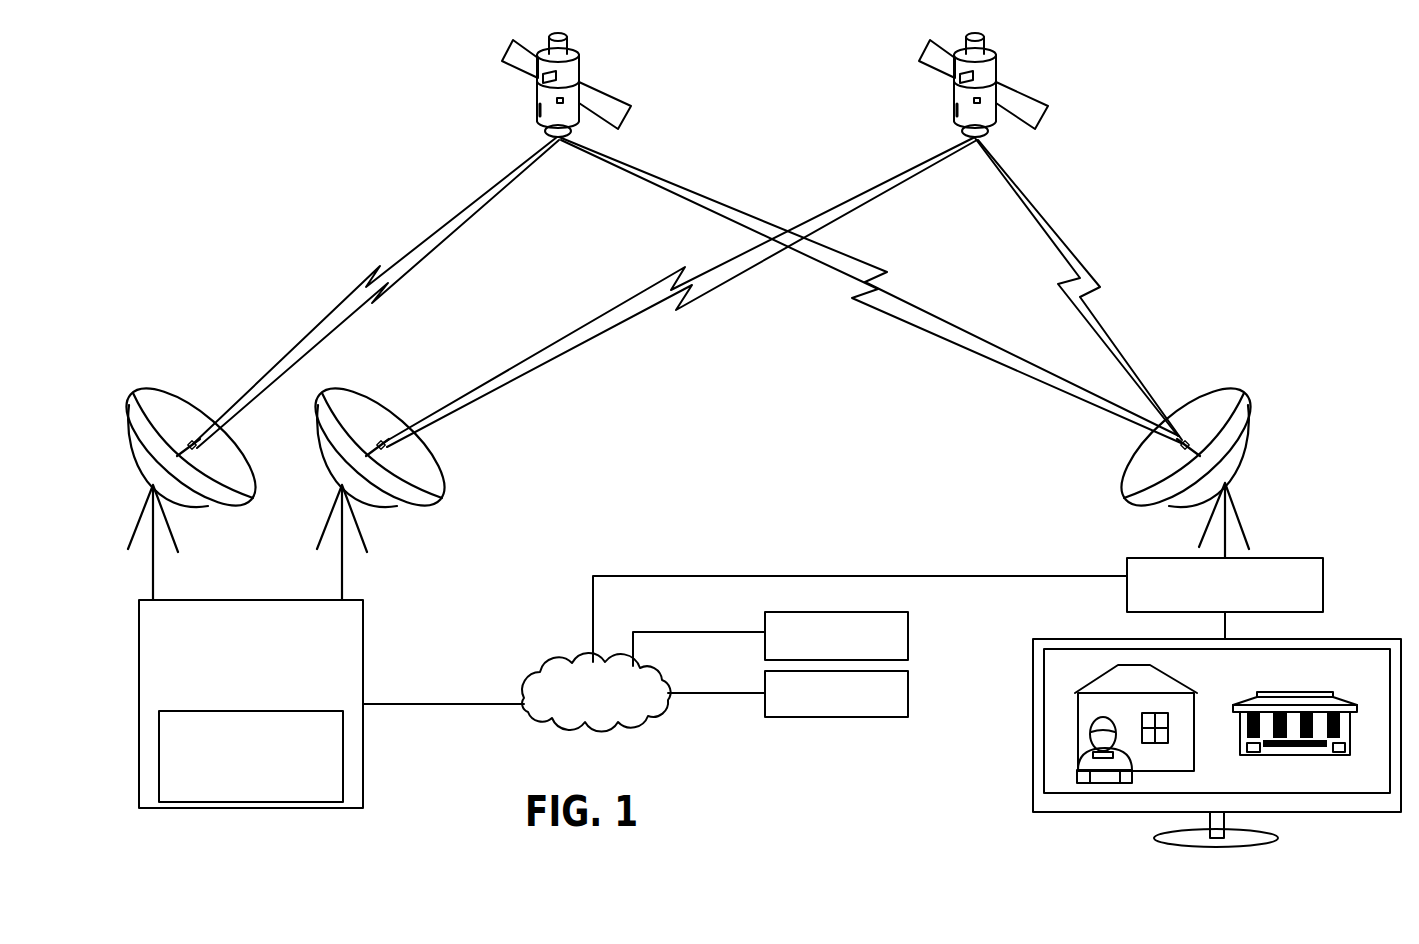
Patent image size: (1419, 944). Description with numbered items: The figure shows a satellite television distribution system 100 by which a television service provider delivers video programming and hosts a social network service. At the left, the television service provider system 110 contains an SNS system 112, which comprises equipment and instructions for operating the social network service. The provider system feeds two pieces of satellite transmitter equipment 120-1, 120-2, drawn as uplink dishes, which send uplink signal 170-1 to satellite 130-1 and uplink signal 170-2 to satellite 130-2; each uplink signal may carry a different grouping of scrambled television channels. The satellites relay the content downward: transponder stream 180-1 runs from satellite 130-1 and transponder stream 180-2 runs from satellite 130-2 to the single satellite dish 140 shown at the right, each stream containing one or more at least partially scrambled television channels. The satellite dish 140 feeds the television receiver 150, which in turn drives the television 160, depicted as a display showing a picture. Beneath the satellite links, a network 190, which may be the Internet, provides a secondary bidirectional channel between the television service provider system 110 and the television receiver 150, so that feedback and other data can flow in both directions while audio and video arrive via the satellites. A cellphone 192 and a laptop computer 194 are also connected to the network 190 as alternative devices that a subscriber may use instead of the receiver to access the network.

The satellite television distribution system 100 is at (209, 114).
The television service provider system 110 is at (352, 810).
The SNS system 112 is at (220, 711).
The satellite transmitter equipment 120-1 is at (156, 393).
The satellite transmitter equipment 120-2 is at (345, 393).
The satellite 130-1 is at (612, 96).
The satellite 130-2 is at (1032, 100).
The satellite dish 140 is at (1224, 392).
The television receiver 150 is at (1290, 558).
The television 160 is at (1366, 640).
The uplink signal 170-1 is at (508, 175).
The uplink signal 170-2 is at (855, 198).
The transponder stream 180-1 is at (748, 185).
The transponder stream 180-2 is at (1060, 232).
The network 190 is at (542, 662).
The cellphone 192 is at (908, 636).
The laptop computer 194 is at (908, 696).